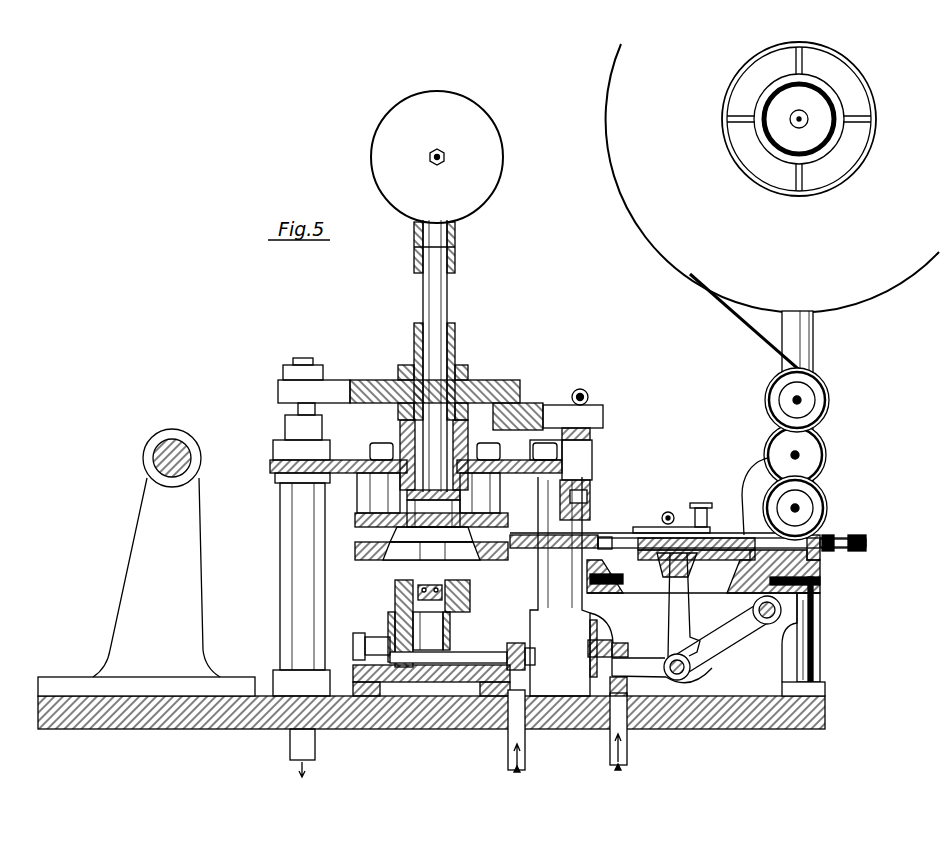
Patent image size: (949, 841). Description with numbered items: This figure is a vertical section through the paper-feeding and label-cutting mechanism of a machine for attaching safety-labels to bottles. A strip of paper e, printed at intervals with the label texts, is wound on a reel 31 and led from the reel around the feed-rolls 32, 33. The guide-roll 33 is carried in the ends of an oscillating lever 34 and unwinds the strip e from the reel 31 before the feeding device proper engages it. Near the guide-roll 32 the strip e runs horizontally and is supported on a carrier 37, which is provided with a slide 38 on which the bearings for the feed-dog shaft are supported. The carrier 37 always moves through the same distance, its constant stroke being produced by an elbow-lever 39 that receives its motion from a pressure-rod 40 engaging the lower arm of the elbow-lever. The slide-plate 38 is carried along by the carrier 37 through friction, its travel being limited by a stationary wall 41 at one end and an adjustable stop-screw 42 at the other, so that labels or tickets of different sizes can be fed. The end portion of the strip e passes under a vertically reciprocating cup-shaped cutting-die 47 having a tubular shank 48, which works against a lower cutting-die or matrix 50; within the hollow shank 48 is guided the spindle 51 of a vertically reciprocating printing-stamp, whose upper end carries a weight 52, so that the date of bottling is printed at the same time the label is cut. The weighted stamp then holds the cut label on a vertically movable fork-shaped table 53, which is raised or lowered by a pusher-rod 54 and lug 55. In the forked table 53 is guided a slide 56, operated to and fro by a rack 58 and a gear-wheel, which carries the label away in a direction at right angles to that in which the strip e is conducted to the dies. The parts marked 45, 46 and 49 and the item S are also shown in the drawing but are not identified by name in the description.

The reel 31 is at (640, 214).
The feed-roll 32 is at (808, 402).
The guide-roll 33 is at (808, 454).
The oscillating lever 34 is at (756, 484).
The carrier 37 is at (692, 560).
The slide-plate 38 is at (721, 537).
The elbow-lever 39 is at (681, 614).
The pressure-rod 40 is at (628, 738).
The stationary wall 41 is at (600, 545).
The adjustable stop-screw 42 is at (855, 551).
The bracket 45 is at (584, 455).
The slide bar 46 is at (597, 535).
The cup-shaped cutting-die 47 is at (411, 514).
The tubular shank 48 is at (455, 352).
The standard 49 is at (292, 410).
The lower cutting-die 50 is at (397, 545).
The spindle 51 is at (436, 300).
The weight 52 is at (492, 162).
The fork-shaped table 53 is at (416, 632).
The pusher-rod 54 is at (509, 736).
The lug 55 is at (450, 655).
The slide 56 is at (432, 585).
The rack 58 is at (470, 597).
The strip S is at (462, 497).
The strip of paper e is at (748, 327).